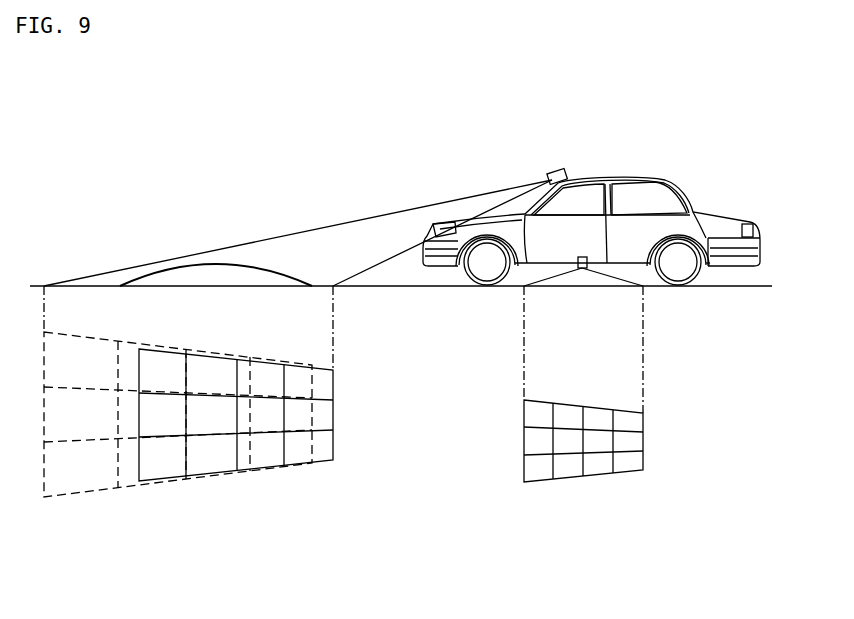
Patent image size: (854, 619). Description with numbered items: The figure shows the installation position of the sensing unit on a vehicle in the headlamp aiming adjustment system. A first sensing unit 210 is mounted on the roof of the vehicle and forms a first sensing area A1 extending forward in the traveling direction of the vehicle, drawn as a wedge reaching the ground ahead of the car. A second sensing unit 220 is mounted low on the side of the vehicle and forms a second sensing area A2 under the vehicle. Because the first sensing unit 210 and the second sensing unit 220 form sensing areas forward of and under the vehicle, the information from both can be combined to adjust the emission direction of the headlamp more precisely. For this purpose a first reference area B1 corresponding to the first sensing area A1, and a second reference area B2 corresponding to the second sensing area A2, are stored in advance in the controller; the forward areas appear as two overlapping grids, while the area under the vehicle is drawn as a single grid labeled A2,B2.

The first sensing unit 210 is at (552, 171).
The second sensing unit 220 is at (583, 269).
The first sensing area A1 is at (95, 494).
The first reference area B1 is at (333, 440).
The second sensing area A2 is at (560, 283).
The second sensing area and second reference area A2,B2 is at (643, 440).
The second reference area B2 is at (647, 441).